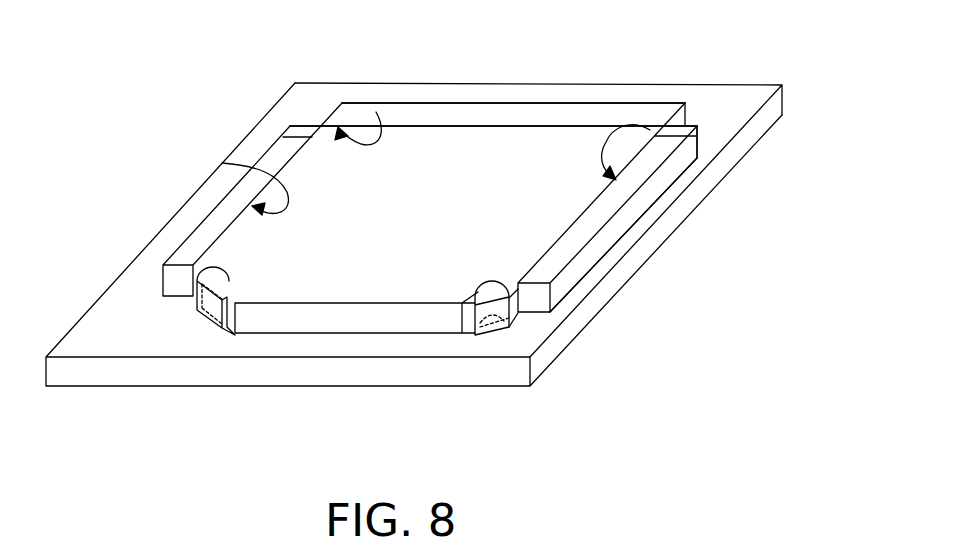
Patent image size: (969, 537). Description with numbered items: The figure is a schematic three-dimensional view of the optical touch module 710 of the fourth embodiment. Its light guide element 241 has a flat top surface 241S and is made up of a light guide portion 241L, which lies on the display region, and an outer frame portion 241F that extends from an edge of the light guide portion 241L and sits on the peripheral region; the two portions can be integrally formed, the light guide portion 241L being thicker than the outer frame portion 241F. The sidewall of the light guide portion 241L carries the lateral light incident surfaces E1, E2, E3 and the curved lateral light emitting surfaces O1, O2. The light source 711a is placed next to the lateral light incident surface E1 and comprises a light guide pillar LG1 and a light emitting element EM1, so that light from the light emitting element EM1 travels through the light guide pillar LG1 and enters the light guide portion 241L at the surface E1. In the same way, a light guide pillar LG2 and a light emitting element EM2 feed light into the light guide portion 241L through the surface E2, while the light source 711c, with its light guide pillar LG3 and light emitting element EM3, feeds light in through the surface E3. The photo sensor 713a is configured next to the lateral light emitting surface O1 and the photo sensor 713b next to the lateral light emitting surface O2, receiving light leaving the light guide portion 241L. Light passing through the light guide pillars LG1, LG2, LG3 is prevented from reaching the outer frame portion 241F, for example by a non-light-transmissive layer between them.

The optical touch module 710 is at (700, 486).
The light guide element 241 is at (632, 282).
The light guide portion 241L is at (458, 147).
The outer frame portion 241F is at (728, 105).
The top surface 241S is at (583, 333).
The light source 711a is at (682, 207).
The light source 711c is at (220, 168).
The light emitting element EM1 is at (688, 140).
The light emitting element EM2 is at (677, 128).
The light emitting element EM3 is at (301, 127).
The light guide pillar LG1 is at (648, 196).
The light guide pillar LG2 is at (588, 115).
The light guide pillar LG3 is at (277, 157).
The lateral light incident surface E1 is at (650, 130).
The lateral light incident surface E2 is at (376, 112).
The lateral light incident surface E3 is at (222, 163).
The lateral light emitting surface O1 is at (225, 273).
The lateral light emitting surface O2 is at (485, 282).
The photo sensor 713a is at (207, 313).
The photo sensor 713b is at (493, 325).